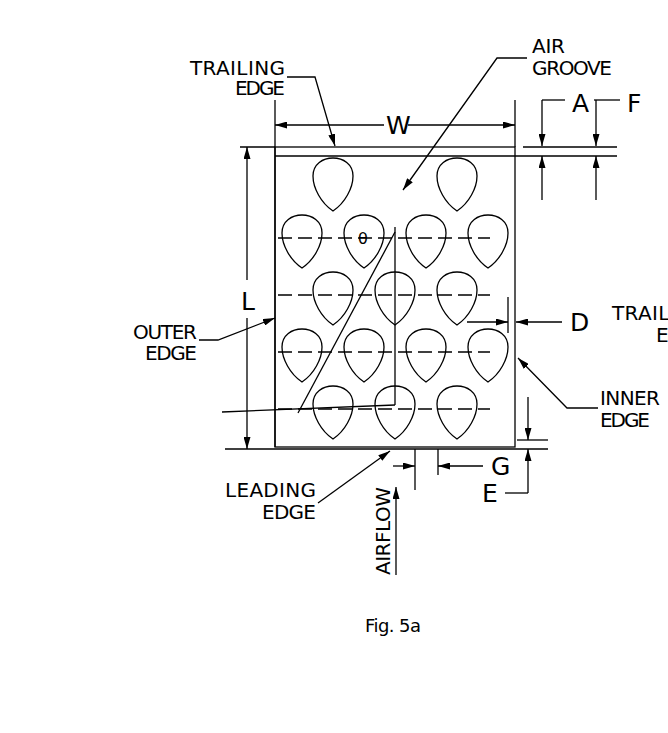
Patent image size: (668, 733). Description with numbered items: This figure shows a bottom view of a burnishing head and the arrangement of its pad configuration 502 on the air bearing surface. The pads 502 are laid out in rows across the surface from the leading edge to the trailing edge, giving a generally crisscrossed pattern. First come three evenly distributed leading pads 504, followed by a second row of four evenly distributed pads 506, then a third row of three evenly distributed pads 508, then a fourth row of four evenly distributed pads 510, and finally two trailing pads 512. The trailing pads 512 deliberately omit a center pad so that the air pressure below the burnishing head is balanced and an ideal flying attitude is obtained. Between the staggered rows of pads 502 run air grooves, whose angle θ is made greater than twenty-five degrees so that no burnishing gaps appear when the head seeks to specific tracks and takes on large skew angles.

The pad configuration 502 is at (297, 288).
The leading pads 504 is at (460, 414).
The second row pads 506 is at (282, 351).
The third row pads 508 is at (275, 287).
The fourth row pads 510 is at (327, 256).
The trailing pads 512 is at (455, 183).